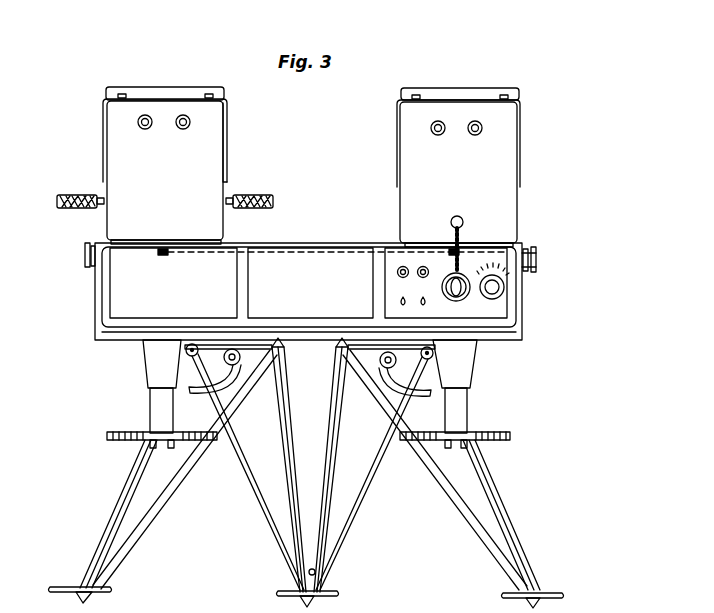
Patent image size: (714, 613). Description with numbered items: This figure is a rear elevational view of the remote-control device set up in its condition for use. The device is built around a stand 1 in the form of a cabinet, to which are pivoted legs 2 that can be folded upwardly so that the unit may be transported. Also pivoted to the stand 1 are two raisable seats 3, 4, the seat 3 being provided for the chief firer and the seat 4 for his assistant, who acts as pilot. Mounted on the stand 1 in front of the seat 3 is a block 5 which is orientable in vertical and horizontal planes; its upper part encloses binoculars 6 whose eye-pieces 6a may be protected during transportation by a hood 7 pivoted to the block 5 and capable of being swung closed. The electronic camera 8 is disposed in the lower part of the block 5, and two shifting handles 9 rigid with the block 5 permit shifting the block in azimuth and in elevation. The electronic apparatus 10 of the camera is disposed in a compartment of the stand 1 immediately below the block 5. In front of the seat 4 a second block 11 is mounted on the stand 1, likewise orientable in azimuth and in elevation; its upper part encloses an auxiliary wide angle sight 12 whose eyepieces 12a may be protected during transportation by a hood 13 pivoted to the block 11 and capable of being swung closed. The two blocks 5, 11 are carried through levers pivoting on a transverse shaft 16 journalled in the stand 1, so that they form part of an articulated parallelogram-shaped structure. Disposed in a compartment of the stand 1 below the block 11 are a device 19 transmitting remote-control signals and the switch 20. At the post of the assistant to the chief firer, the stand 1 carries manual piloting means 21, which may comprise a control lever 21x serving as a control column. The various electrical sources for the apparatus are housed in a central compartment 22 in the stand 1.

The stand 1 is at (304, 242).
The legs 2 is at (275, 542).
The seat 3 is at (110, 441).
The seat 4 is at (505, 441).
The block 5 is at (100, 161).
The binoculars 6 is at (115, 110).
The eye-pieces 6a is at (146, 116).
The hood 7 is at (226, 160).
The electronic camera 8 is at (116, 224).
The shifting handles 9 is at (57, 206).
The electronic apparatus 10 is at (126, 299).
The block 11 is at (522, 205).
The auxiliary wide angle sight 12 is at (510, 128).
The eyepieces 12a is at (440, 121).
The hood 13 is at (518, 106).
The transverse shaft 16 is at (340, 254).
The device transmitting remote-control signals 19 is at (487, 262).
The switch 20 is at (477, 318).
The manual piloting means 21 is at (502, 306).
The control lever 21x is at (462, 234).
The central compartment 22 is at (316, 318).